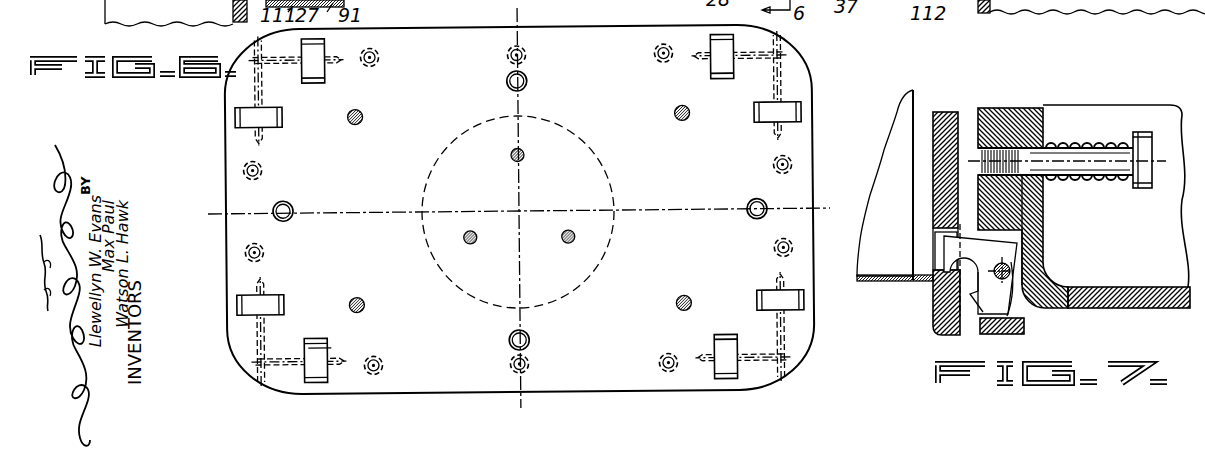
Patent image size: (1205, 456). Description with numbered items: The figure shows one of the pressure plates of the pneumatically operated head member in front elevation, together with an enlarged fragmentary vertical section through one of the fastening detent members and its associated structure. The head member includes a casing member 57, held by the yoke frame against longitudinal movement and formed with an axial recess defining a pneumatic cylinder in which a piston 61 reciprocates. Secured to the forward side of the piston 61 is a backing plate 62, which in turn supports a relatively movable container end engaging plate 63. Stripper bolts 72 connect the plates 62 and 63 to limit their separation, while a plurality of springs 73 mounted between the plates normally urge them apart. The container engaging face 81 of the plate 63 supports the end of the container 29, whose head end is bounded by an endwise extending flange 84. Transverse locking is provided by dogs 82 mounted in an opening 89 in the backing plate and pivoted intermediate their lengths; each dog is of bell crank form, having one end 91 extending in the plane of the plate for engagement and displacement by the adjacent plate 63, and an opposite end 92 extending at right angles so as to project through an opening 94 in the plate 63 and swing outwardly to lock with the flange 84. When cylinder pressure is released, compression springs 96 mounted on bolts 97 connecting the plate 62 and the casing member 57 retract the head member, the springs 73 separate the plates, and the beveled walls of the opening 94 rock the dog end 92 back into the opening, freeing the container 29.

In FIG. 7, the container 29 is at (893, 277).
In FIG. 7, the casing member 57 is at (1120, 308).
In FIG. 6, the piston 61 is at (615, 190).
In FIG. 6, the backing plate 62 is at (813, 133).
In FIG. 7, the backing plate 62 is at (1002, 110).
In FIG. 7, the container end engaging plate 63 is at (950, 112).
In FIG. 6, the stripper bolts 72 is at (509, 87).
In FIG. 6, the springs 73 is at (380, 61).
In FIG. 7, the container engaging face 81 is at (935, 175).
In FIG. 6, the dogs 82 is at (322, 72).
In FIG. 7, the dogs 82 is at (1013, 265).
In FIG. 7, the flange 84 is at (890, 283).
In FIG. 6, the opening 89 is at (322, 342).
In FIG. 7, the opening 89 is at (1025, 243).
In FIG. 7, the dog end 91 is at (1020, 313).
In FIG. 7, the dog end 92 is at (947, 240).
In FIG. 7, the opening 94 is at (940, 247).
In FIG. 7, the compression springs 96 is at (1098, 184).
In FIG. 6, the bolts 97 is at (363, 124).
In FIG. 7, the bolts 97 is at (1147, 188).